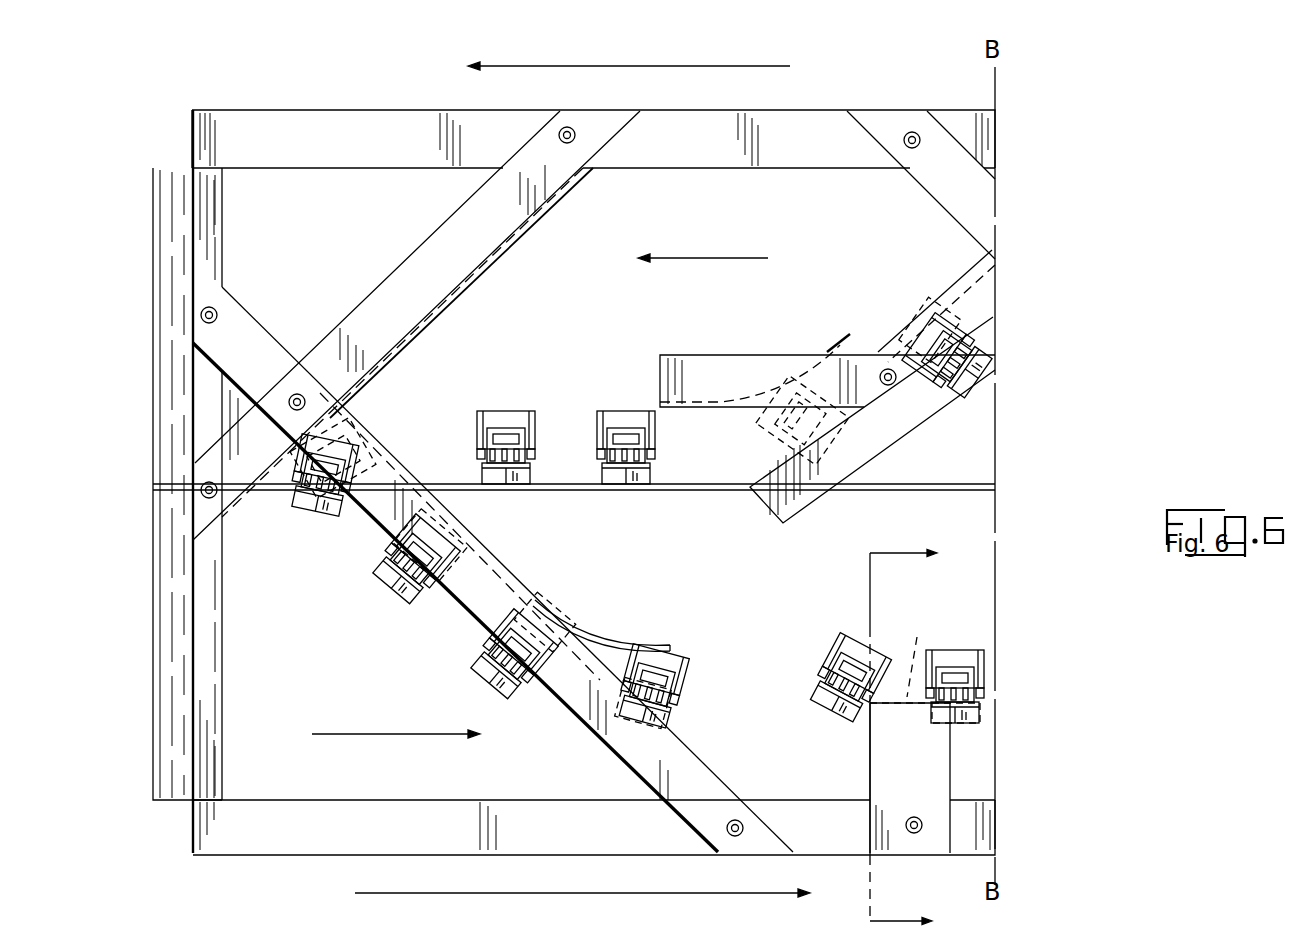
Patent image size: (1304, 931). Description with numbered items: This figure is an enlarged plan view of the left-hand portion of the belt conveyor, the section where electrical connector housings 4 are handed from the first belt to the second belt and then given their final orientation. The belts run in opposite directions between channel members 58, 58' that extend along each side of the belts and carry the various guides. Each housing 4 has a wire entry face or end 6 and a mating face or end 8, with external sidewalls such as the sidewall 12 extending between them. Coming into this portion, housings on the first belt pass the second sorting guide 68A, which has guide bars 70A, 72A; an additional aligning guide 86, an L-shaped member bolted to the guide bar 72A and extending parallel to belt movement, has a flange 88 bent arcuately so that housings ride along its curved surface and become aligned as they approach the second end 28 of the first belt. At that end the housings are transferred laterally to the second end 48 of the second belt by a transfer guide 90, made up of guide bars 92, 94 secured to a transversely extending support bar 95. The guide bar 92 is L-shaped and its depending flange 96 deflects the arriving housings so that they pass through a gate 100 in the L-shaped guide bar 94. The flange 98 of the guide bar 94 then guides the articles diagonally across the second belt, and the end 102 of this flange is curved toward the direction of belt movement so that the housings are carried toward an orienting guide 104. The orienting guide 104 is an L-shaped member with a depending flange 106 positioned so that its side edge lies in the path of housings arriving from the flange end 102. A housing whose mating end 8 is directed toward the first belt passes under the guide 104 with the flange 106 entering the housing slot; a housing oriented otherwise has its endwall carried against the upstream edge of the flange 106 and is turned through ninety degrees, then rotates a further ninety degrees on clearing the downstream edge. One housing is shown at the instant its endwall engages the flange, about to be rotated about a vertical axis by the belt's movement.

The second end of the first belt 28 is at (335, 192).
The channel member 58 is at (593, 123).
The channel member 58' is at (594, 845).
The second end of the second belt 48 is at (240, 644).
The support bar 95 is at (200, 223).
The second sorting guide 68A is at (994, 254).
The guide bar 70A is at (912, 173).
The guide bar 72A is at (900, 338).
The transfer guide 90 is at (306, 350).
The guide bar 92 is at (430, 292).
The depending flange 96 is at (487, 255).
The gate 100 is at (380, 430).
The electrical connector housing 4 is at (322, 505).
The aligning guide 86 is at (697, 356).
The flange 88 is at (838, 345).
The guide bar 94 is at (456, 577).
The flange 98 is at (477, 532).
The end of flange 102 is at (605, 625).
The mating face or end 8 is at (672, 648).
The wire entry face or end 6 is at (858, 632).
The depending flange 106 is at (929, 650).
The orienting guide 104 is at (878, 768).
The external sidewall 12 is at (920, 737).